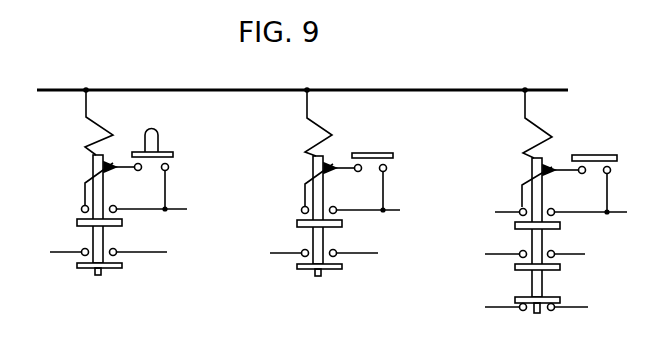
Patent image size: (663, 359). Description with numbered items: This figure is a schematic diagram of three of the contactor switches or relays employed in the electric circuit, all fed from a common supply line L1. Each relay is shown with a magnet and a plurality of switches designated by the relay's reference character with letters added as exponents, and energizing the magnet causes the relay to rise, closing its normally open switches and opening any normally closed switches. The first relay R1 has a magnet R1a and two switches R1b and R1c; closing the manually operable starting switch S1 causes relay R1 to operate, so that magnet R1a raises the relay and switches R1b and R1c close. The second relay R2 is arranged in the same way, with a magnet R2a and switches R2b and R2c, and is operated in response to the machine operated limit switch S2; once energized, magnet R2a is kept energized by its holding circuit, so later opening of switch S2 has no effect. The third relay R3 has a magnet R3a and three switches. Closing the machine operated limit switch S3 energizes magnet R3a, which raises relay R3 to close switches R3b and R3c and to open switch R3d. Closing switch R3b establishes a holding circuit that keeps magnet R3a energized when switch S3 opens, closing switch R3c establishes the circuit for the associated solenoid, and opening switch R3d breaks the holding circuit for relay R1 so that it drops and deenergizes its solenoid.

The power supply line L1 is at (63, 90).
The relay R1 is at (105, 204).
The magnet R1a is at (88, 147).
The switch R1b is at (77, 222).
The switch R1c is at (125, 287).
The starting switch S1 is at (159, 168).
The relay R2 is at (325, 206).
The magnet R2a is at (308, 176).
The switch R2b is at (325, 221).
The switch R2c is at (314, 265).
The limit switch S2 is at (372, 173).
The relay R3 is at (544, 221).
The magnet R3a is at (531, 192).
The switch R3b is at (546, 223).
The switch R3c is at (523, 266).
The switch R3d is at (550, 294).
The limit switch S3 is at (594, 175).